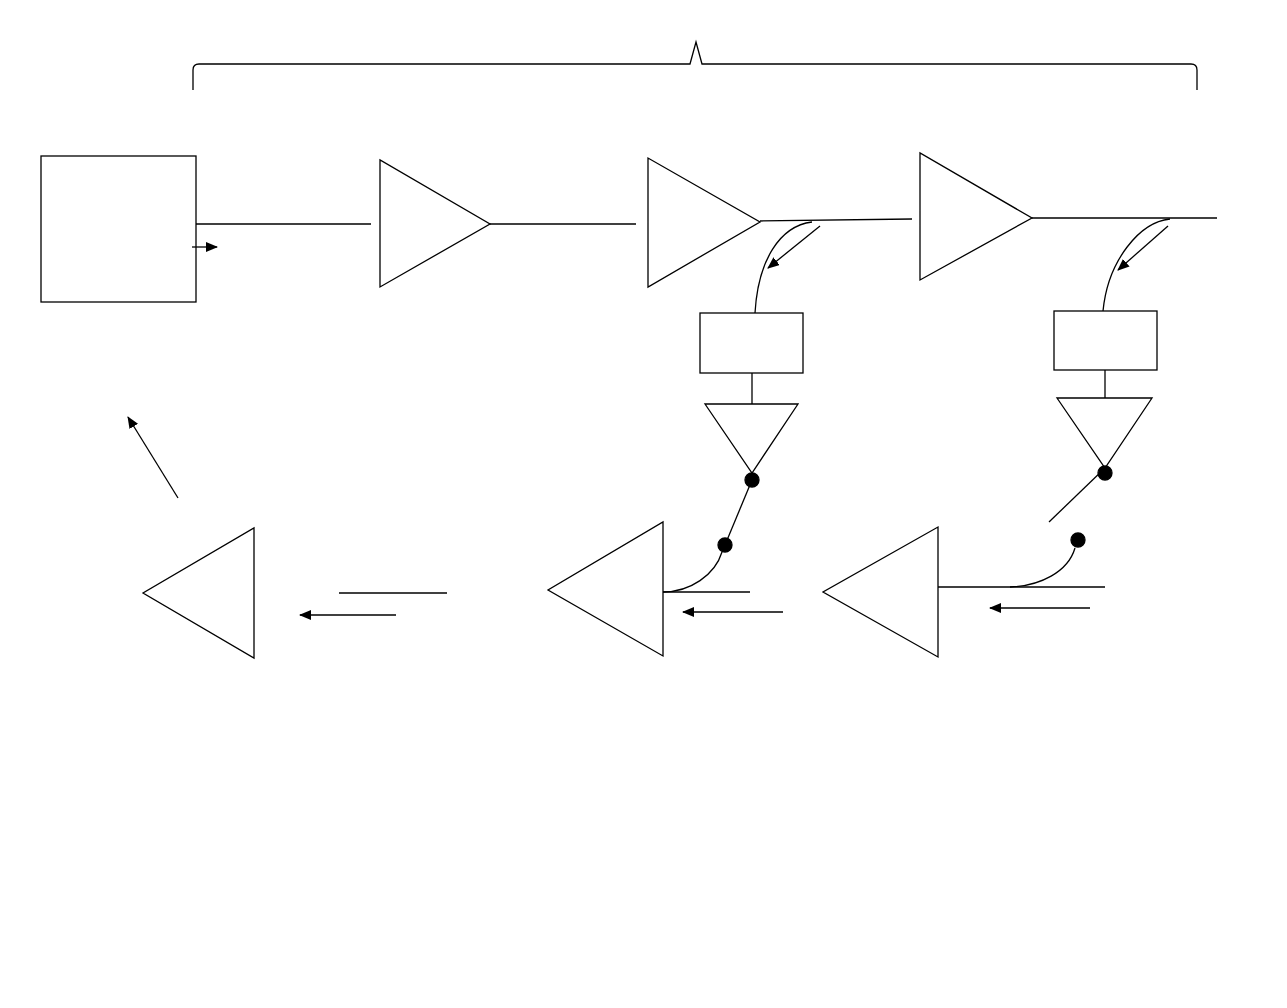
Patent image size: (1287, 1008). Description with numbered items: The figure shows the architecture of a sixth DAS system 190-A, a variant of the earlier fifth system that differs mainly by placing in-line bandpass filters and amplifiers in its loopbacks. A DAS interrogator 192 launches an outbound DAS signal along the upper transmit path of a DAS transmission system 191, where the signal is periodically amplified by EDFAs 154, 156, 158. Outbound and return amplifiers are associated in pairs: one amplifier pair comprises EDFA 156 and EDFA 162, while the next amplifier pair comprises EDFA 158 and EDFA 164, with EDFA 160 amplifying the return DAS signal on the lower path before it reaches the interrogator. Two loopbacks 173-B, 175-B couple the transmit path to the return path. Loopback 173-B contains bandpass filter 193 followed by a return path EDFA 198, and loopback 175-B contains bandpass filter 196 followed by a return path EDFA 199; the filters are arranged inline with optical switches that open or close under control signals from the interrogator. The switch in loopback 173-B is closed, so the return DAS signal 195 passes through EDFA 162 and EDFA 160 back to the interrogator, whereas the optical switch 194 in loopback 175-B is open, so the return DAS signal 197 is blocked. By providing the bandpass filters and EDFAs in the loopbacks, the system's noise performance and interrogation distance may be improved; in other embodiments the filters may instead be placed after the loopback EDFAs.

The DAS system 190-A is at (664, 785).
The DAS transmission system 191 is at (695, 48).
The DAS interrogator 192 is at (795, 500).
The EDFA 154 is at (435, 223).
The EDFA 156 is at (704, 222).
The EDFA 158 is at (976, 216).
The EDFA 160 is at (198, 593).
The EDFA 162 is at (605, 589).
The EDFA 164 is at (880, 592).
The loopback 173-B is at (513, 437).
The loopback 175-B is at (970, 455).
The bandpass filter 193 is at (803, 363).
The bandpass filter 196 is at (1145, 349).
The EDFA 198 is at (775, 442).
The EDFA 199 is at (1120, 448).
The optical switch 194 is at (1086, 505).
The return DAS signal 195 is at (622, 344).
The return DAS signal 197 is at (965, 357).